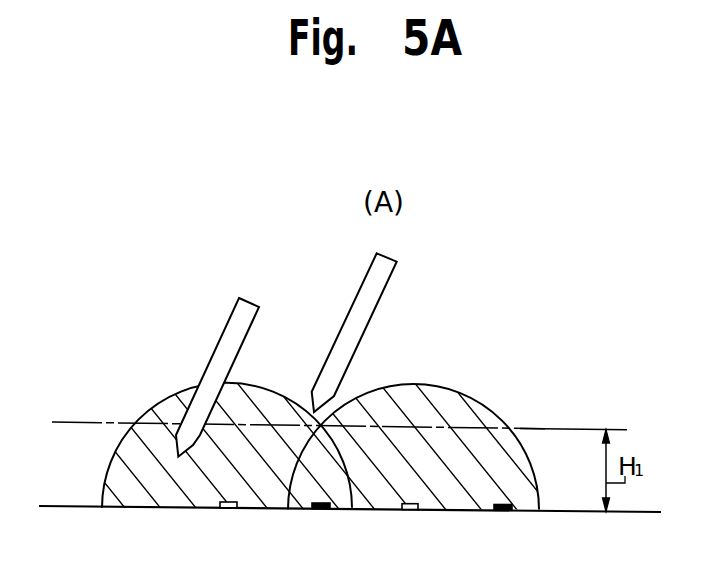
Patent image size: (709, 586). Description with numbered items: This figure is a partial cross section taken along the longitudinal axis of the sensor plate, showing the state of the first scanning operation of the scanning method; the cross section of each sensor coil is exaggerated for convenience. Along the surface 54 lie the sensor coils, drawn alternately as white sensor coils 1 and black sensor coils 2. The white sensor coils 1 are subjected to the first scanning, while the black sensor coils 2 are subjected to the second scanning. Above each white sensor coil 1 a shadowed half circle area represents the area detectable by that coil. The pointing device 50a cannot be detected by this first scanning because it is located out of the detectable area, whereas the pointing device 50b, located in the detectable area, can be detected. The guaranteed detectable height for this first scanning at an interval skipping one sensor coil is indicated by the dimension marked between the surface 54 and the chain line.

The pointing device 50a is at (378, 308).
The pointing device 50b is at (240, 347).
The substrate surface 54 is at (638, 513).
The white sensor coil 1 is at (318, 524).
The black sensor coil 2 is at (413, 524).